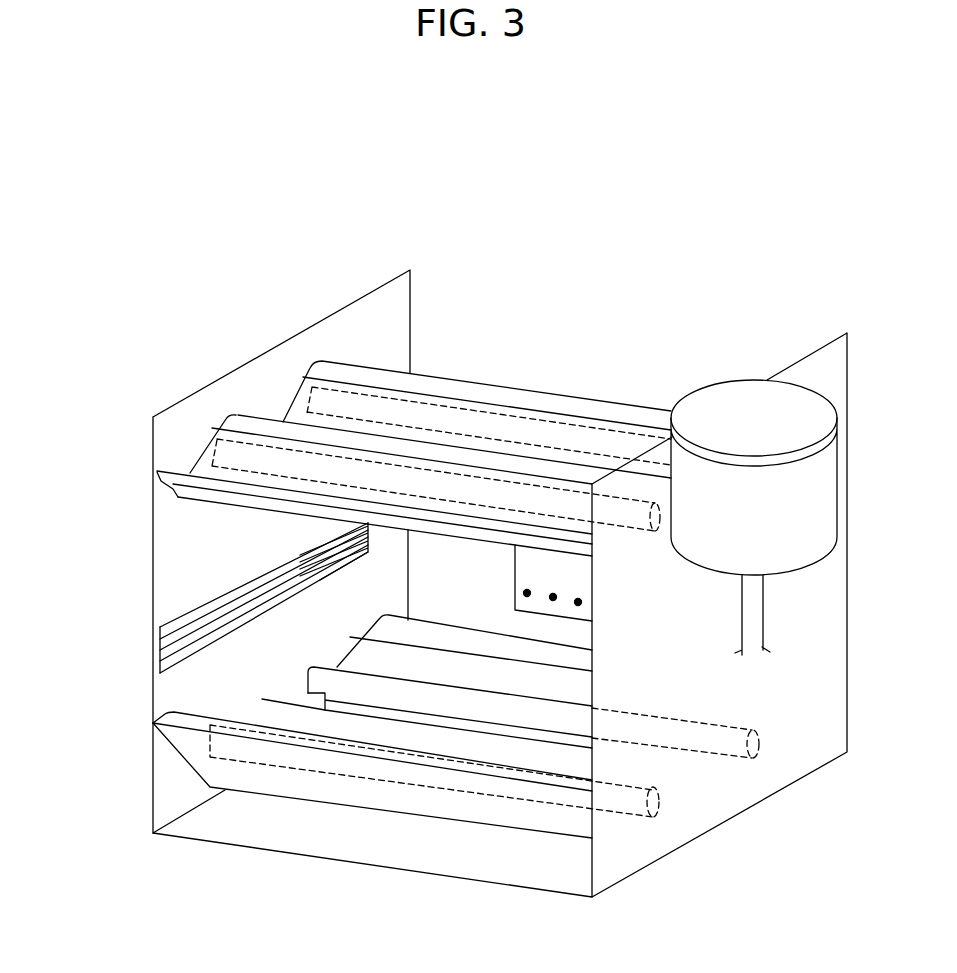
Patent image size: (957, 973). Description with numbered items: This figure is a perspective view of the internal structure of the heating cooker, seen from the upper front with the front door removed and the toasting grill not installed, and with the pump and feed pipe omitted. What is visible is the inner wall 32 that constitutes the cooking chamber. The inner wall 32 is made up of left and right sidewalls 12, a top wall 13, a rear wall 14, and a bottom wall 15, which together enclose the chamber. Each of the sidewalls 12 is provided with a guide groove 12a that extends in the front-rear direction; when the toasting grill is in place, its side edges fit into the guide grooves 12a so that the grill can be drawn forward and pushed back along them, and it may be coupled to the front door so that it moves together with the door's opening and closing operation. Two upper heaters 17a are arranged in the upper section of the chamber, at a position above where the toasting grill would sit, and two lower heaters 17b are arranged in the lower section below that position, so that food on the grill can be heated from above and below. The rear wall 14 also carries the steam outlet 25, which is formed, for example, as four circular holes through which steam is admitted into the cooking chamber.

The inner wall 32 is at (662, 178).
The sidewall 12 is at (210, 548).
The guide groove 12a is at (158, 668).
The top wall 13 is at (443, 457).
The rear wall 14 is at (482, 592).
The bottom wall 15 is at (295, 780).
The upper heater 17a is at (248, 413).
The lower heater 17b is at (478, 703).
The steam outlet 25 is at (554, 600).